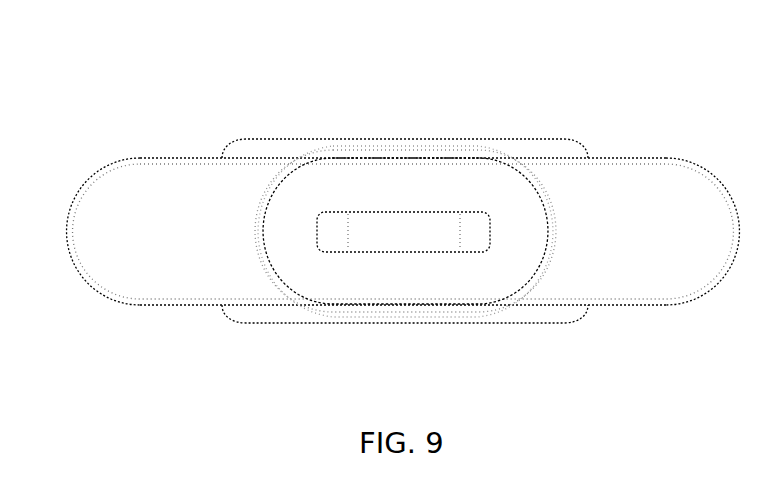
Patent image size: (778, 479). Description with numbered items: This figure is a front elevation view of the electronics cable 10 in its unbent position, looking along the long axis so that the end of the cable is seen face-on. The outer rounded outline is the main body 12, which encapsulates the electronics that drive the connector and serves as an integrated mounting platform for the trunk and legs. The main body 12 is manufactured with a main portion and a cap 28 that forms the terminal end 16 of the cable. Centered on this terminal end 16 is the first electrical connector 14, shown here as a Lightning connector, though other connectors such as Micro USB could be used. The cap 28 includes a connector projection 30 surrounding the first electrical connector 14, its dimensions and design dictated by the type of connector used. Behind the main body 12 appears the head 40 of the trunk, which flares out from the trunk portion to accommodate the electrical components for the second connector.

The cable 10 is at (155, 104).
The main body 12 is at (78, 190).
The first electrical connector 14 is at (405, 211).
The terminal end 16 is at (622, 186).
The cap 28 is at (643, 305).
The connector projection 30 is at (263, 241).
The head 40 is at (271, 323).